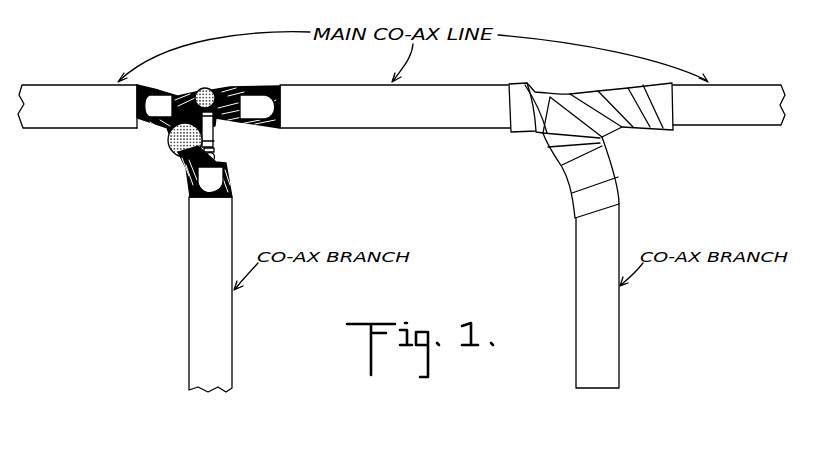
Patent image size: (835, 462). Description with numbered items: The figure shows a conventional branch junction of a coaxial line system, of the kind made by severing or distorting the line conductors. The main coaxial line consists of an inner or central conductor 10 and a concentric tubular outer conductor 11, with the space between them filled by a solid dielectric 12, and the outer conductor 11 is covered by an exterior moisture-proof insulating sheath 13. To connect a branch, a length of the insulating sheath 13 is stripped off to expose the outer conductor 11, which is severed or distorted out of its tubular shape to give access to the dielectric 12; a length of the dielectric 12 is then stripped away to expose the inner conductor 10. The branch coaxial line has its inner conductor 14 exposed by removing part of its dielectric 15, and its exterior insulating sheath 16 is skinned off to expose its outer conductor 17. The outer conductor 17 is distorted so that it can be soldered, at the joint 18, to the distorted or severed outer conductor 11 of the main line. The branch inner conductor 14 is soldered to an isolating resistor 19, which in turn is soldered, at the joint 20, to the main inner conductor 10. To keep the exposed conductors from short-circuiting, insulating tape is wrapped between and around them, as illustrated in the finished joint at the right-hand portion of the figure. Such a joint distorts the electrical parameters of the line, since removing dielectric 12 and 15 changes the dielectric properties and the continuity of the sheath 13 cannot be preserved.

The inner conductor 10 is at (185, 141).
The outer conductor 11 is at (155, 130).
The solid dielectric 12 is at (144, 128).
The insulating sheath 13 is at (76, 90).
The inner conductor of branch line 14 is at (214, 158).
The dielectric of branch line 15 is at (212, 176).
The exterior insulating sheath of branch line 16 is at (196, 235).
The outer conductor of branch line 17 is at (227, 190).
The soldered joint 18 is at (178, 155).
The isolating resistor 19 is at (215, 126).
The soldered joint 20 is at (213, 91).